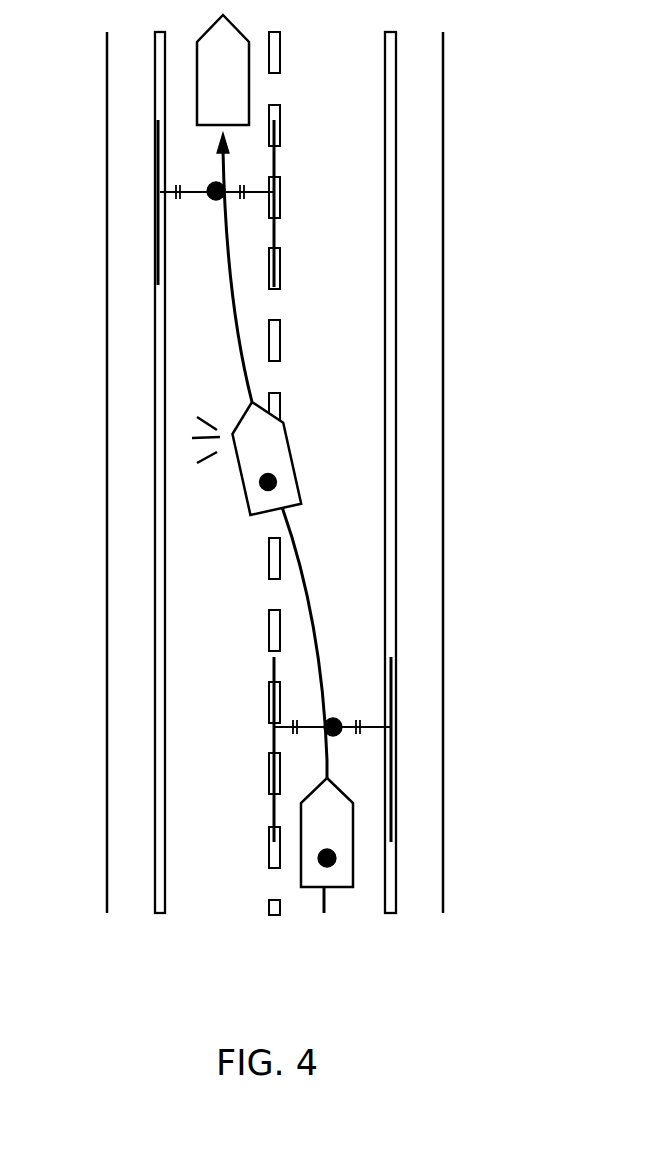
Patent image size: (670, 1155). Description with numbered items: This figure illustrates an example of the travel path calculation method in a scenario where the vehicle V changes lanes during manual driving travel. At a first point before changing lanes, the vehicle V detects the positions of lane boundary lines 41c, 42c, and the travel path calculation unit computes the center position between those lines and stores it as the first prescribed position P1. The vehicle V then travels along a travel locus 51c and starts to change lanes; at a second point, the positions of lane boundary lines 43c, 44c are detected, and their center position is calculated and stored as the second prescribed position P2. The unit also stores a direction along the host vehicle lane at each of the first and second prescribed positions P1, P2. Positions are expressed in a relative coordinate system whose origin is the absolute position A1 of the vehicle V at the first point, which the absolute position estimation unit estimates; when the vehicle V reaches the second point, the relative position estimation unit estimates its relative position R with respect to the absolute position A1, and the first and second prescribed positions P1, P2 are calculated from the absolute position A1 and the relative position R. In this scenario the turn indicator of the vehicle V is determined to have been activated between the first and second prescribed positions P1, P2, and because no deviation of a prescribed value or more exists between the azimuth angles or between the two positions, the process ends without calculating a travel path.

The lane boundary line 41c is at (275, 672).
The lane boundary line 42c is at (395, 680).
The lane boundary line 43c is at (158, 170).
The lane boundary line 44c is at (274, 173).
The travel locus 51c is at (307, 593).
The first prescribed position P1 is at (333, 737).
The second prescribed position P2 is at (215, 200).
The relative position R is at (278, 477).
The absolute position A1 is at (330, 867).
The vehicle V is at (252, 80).